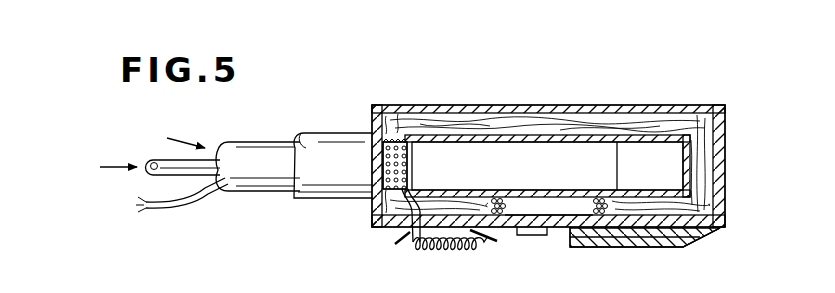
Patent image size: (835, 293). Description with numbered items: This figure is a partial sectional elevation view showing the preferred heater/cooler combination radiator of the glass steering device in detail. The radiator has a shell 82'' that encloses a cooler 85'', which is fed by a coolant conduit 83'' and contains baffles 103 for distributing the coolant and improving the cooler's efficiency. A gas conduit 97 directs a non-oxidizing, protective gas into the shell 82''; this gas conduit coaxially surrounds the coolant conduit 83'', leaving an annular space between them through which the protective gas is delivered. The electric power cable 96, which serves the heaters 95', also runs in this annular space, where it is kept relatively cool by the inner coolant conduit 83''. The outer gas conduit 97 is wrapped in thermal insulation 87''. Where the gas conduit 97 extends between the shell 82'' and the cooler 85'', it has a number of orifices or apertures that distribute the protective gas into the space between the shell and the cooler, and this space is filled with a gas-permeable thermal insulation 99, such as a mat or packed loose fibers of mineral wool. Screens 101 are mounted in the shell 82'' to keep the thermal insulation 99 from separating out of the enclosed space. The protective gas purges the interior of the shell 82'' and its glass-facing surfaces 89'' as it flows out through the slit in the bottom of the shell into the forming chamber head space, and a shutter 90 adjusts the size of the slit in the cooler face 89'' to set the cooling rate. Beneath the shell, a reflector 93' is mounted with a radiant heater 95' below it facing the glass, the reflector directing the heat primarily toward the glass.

The shell 82'' is at (579, 166).
The coolant conduit 83'' is at (163, 153).
The cooler 85'' is at (548, 145).
The thermal insulation 87'' is at (333, 148).
The glass-facing surface of the shell (cooler face) 89'' is at (713, 242).
The shutter 90 is at (626, 243).
The reflector 93' is at (383, 206).
The heater 95' is at (455, 258).
The electric power cable 96 is at (170, 206).
The gas conduit 97 is at (250, 182).
The thermal insulation 99 is at (487, 130).
The screen 101 is at (592, 205).
The baffle 103 is at (550, 178).